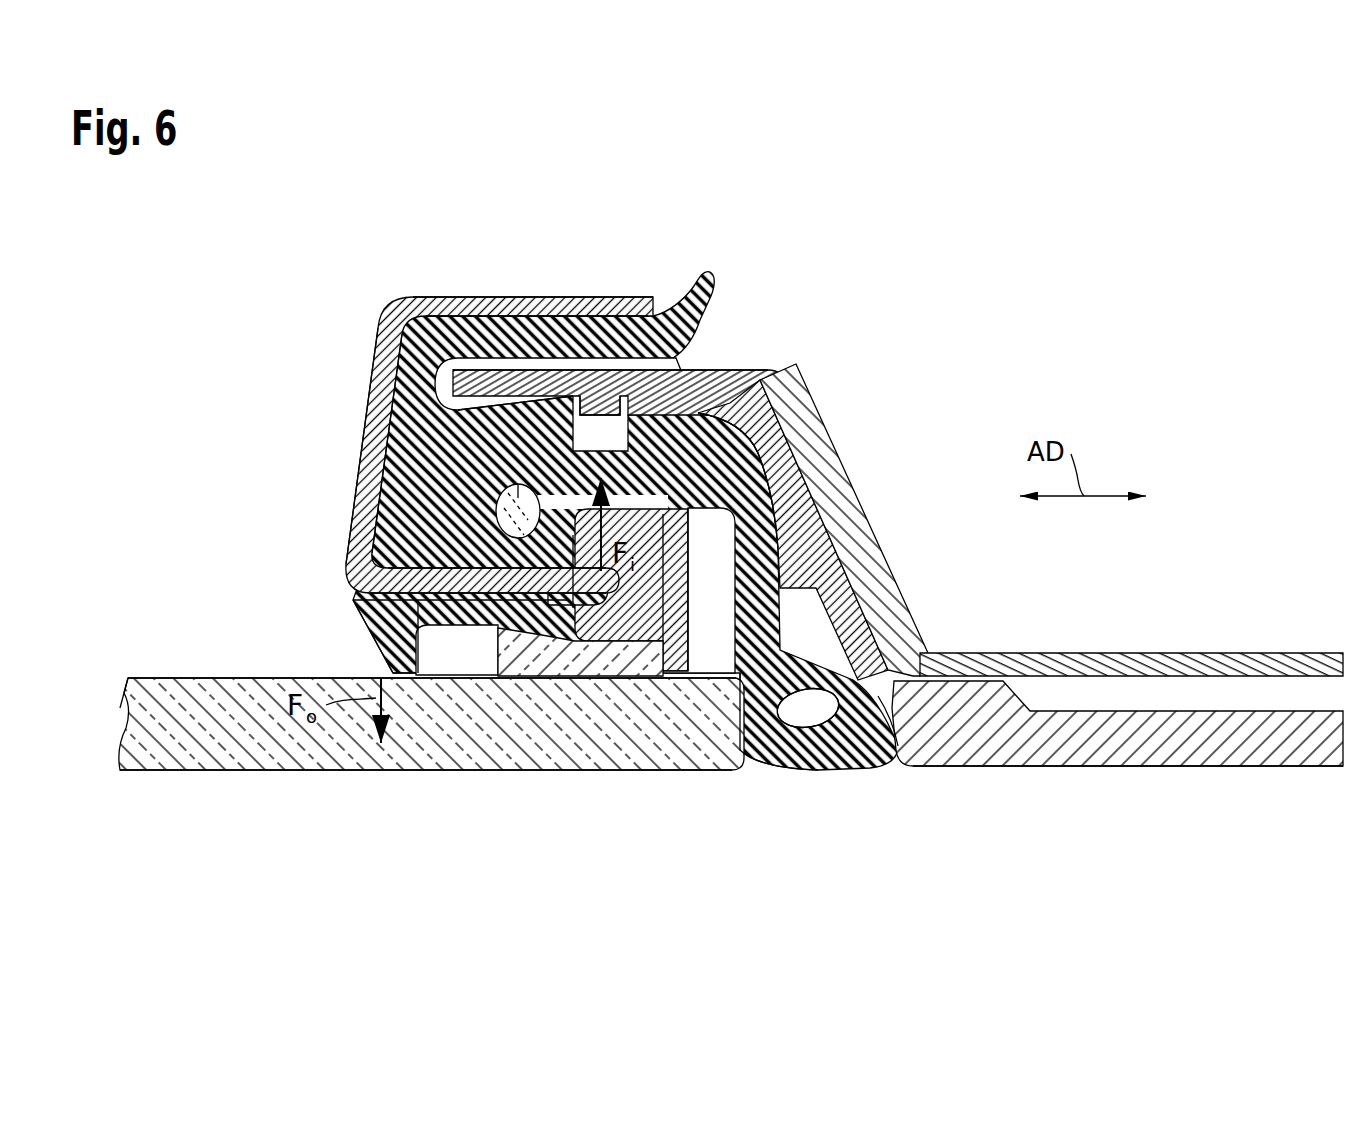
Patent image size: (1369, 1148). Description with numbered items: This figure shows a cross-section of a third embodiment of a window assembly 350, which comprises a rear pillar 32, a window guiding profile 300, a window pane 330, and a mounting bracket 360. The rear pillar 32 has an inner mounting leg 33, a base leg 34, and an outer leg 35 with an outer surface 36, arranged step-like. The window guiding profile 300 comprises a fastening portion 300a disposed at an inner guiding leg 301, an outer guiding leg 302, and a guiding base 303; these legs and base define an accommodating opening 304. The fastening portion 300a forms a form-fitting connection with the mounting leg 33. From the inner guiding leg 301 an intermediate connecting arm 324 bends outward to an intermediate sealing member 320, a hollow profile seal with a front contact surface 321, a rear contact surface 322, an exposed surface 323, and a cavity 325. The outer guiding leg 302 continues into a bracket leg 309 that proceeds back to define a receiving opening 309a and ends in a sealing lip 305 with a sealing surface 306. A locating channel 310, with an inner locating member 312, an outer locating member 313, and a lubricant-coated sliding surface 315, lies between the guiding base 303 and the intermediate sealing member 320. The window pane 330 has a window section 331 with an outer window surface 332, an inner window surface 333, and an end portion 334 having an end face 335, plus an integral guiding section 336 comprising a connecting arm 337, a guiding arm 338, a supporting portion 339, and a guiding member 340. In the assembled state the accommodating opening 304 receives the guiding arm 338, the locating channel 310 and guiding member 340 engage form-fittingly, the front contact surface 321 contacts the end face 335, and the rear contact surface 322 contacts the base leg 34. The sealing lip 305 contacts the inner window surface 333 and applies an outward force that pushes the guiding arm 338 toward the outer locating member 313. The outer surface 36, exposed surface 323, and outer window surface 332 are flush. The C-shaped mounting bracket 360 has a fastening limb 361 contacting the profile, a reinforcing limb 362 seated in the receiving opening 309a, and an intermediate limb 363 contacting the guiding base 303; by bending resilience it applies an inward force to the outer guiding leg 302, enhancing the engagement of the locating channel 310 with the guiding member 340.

The window guiding profile 300 is at (716, 290).
The fastening portion 300a is at (600, 428).
The inner guiding leg 301 is at (482, 436).
The outer guiding leg 302 is at (472, 553).
The guiding base 303 is at (395, 489).
The accommodating opening 304 is at (644, 492).
The sealing lip 305 is at (356, 641).
The sealing surface 306 is at (375, 662).
The bracket leg 309 is at (378, 603).
The receiving opening 309a is at (410, 592).
The locating channel 310 is at (470, 487).
The inner locating member 312 is at (584, 443).
The outer locating member 313 is at (565, 527).
The sliding surface 315 is at (510, 476).
The intermediate sealing member 320 is at (760, 573).
The front contact surface 321 is at (737, 697).
The rear contact surface 322 is at (882, 727).
The exposed surface 323 is at (847, 750).
The intermediate connecting arm 324 is at (747, 503).
The cavity 325 is at (800, 702).
The window pane 330 is at (152, 767).
The window section 331 is at (228, 724).
The outer window surface 332 is at (268, 767).
The inner window surface 333 is at (178, 665).
The end portion 334 is at (660, 712).
The end face 335 is at (771, 736).
The guiding section 336 is at (706, 591).
The connecting arm 337 is at (699, 590).
The guiding arm 338 is at (634, 513).
The supporting portion 339 is at (548, 656).
The guiding member 340 is at (488, 500).
The window assembly 350 is at (986, 325).
The mounting bracket 360 is at (378, 300).
The fastening limb 361 is at (413, 292).
The reinforcing limb 362 is at (348, 566).
The intermediate limb 363 is at (372, 360).
The rear pillar 32 is at (1022, 608).
The inner mounting leg 33 is at (710, 392).
The base leg 34 is at (833, 548).
The outer leg 35 is at (1180, 727).
The outer surface 36 is at (1140, 762).